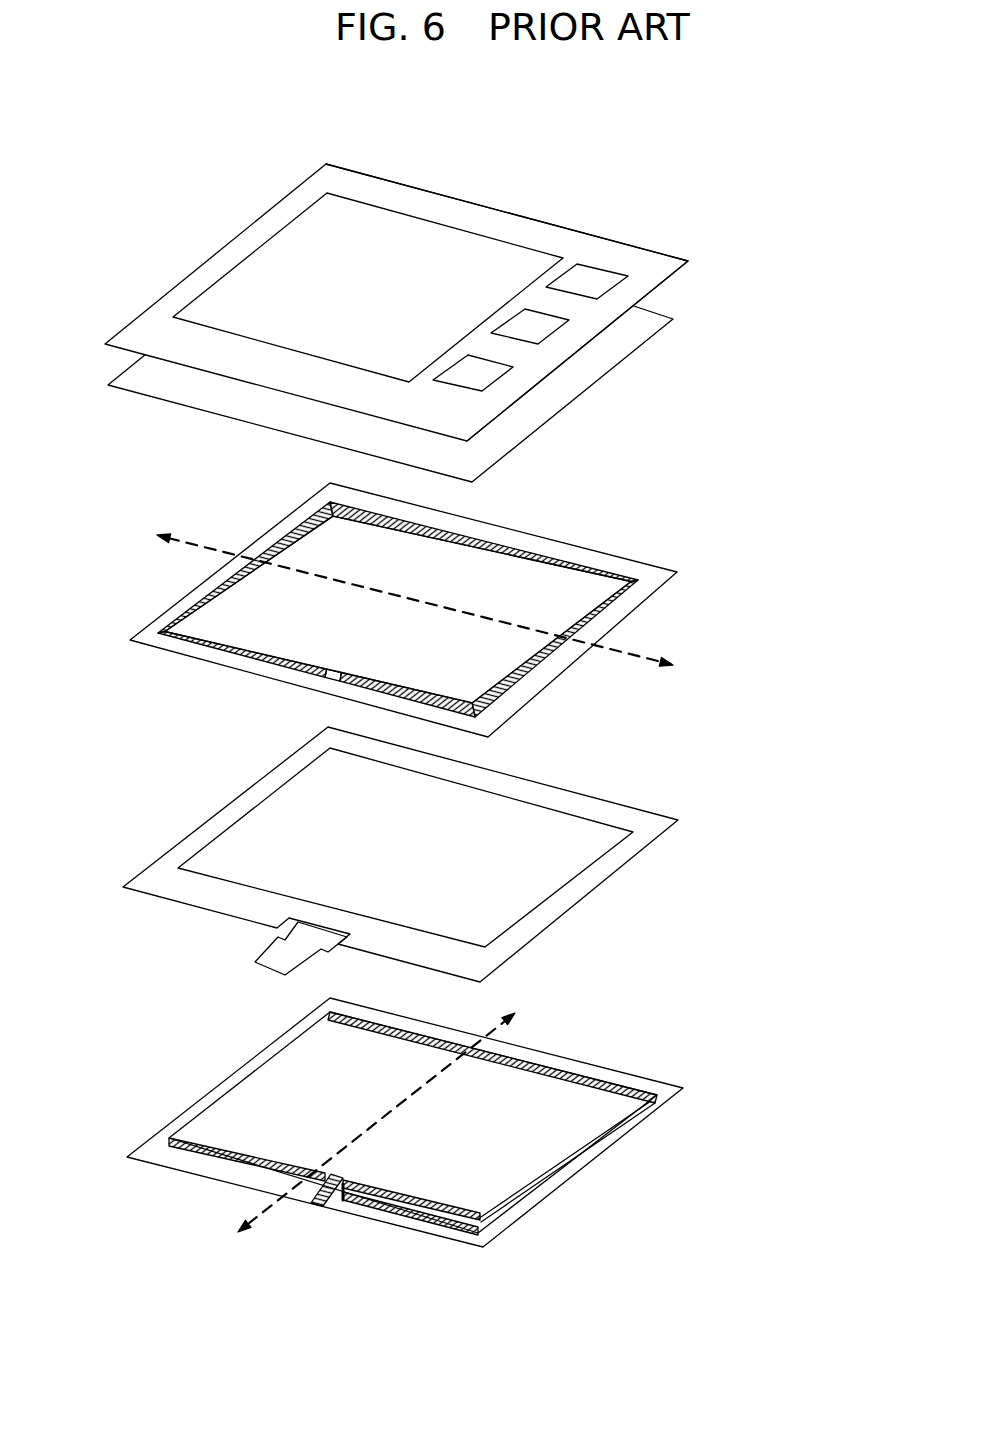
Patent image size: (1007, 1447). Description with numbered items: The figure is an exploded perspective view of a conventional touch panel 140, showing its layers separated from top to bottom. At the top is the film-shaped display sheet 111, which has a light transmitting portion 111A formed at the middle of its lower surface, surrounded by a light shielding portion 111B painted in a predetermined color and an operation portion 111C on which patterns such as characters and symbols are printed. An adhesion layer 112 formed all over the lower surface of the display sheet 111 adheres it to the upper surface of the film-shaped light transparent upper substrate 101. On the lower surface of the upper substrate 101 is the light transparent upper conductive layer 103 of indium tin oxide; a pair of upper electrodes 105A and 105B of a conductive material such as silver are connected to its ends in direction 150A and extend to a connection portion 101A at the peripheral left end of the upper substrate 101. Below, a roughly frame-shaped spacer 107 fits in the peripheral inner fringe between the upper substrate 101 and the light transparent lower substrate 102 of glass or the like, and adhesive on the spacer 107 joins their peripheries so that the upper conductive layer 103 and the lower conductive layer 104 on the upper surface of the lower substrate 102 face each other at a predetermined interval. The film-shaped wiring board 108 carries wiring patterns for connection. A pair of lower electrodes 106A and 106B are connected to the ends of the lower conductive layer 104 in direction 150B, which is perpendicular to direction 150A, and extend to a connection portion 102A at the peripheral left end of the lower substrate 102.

The conventional touch panel 140 is at (647, 145).
The display sheet 111 is at (157, 298).
The light transmitting portion 111A is at (245, 280).
The light shielding portion 111B is at (617, 253).
The operation portion 111C is at (536, 323).
The adhesion layer 112 is at (130, 391).
The upper substrate 101 is at (637, 562).
The upper conductive layer 103 is at (532, 582).
The upper electrode 105A is at (628, 595).
The upper electrode 105B is at (307, 518).
The connection portion 101A is at (313, 691).
The direction 150A is at (627, 657).
The spacer 107 is at (613, 875).
The wiring board 108 is at (270, 963).
The lower substrate 102 is at (657, 1115).
The lower conductive layer 104 is at (533, 1135).
The lower electrode 106A is at (220, 1153).
The lower electrode 106B is at (628, 1085).
The connection portion 102A is at (323, 1208).
The direction 150B is at (273, 1207).